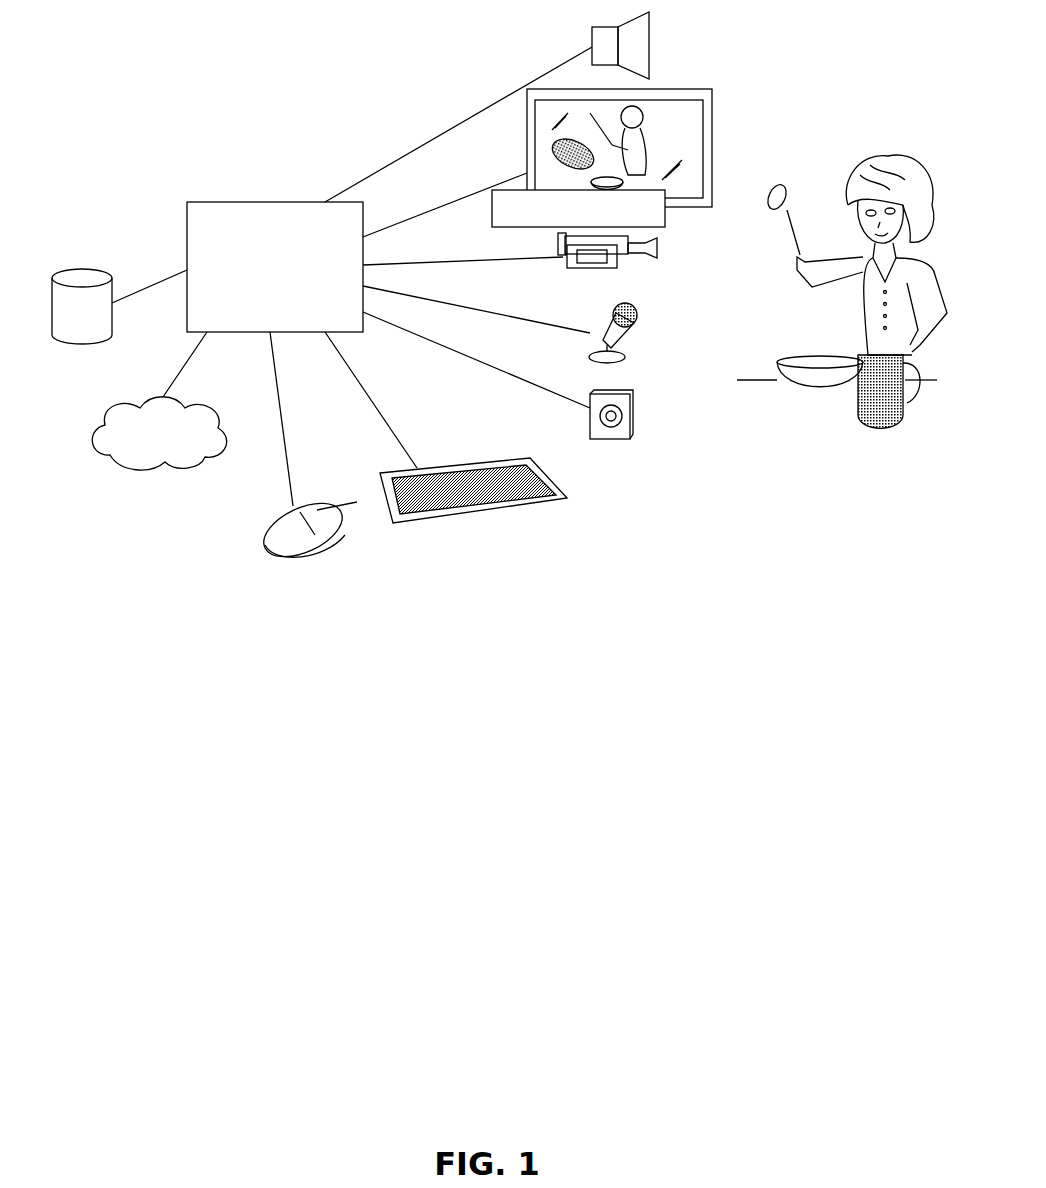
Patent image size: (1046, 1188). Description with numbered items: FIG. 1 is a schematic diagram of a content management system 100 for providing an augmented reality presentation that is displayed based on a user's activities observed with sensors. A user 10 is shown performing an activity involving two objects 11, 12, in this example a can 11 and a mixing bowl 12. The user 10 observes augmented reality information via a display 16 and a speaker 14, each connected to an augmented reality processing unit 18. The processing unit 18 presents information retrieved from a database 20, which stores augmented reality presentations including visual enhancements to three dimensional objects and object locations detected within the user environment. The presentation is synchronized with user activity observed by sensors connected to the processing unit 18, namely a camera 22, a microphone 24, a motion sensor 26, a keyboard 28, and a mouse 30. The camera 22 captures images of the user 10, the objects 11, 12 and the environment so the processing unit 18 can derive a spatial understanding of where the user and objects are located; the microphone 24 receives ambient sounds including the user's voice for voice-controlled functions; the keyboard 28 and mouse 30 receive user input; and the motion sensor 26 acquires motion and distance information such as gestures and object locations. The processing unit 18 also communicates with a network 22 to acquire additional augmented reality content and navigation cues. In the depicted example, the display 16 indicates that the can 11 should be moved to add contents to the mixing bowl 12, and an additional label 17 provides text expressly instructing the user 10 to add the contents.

The system 100 is at (517, 1137).
The user 10 is at (907, 158).
The object 11 is at (858, 405).
The mixing bowl 12 is at (812, 355).
The speaker 14 is at (652, 42).
The display 16 is at (713, 115).
The label 17 is at (667, 220).
The augmented reality processing unit 18 is at (254, 201).
The database 20 is at (82, 306).
The camera 22 is at (680, 236).
The microphone 24 is at (640, 312).
The motion sensor 26 is at (633, 410).
The keyboard 28 is at (497, 512).
The mouse 30 is at (322, 547).